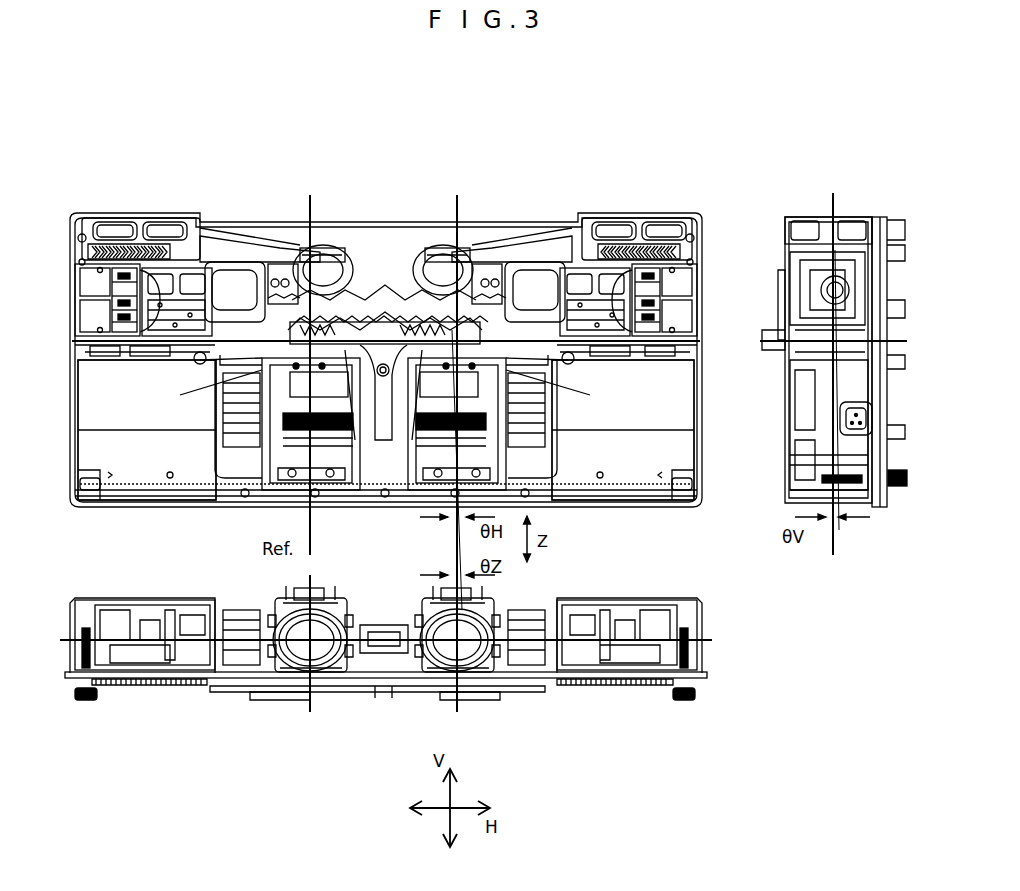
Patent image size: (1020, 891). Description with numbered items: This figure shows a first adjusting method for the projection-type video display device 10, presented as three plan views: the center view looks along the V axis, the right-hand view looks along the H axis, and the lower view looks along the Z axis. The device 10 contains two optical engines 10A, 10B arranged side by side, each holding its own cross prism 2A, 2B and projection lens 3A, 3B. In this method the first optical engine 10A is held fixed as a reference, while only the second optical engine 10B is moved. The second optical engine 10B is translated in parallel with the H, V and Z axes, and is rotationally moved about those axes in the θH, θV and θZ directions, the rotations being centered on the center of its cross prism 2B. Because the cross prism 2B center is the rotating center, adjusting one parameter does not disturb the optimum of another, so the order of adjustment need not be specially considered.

The projection-type video display device 10 is at (412, 163).
The first optical engine 10A is at (266, 196).
The second optical engine 10B is at (594, 366).
The cross prism 2A is at (250, 376).
The cross prism 2B is at (520, 372).
The projection lens 3A is at (300, 617).
The projection lens 3B is at (468, 625).